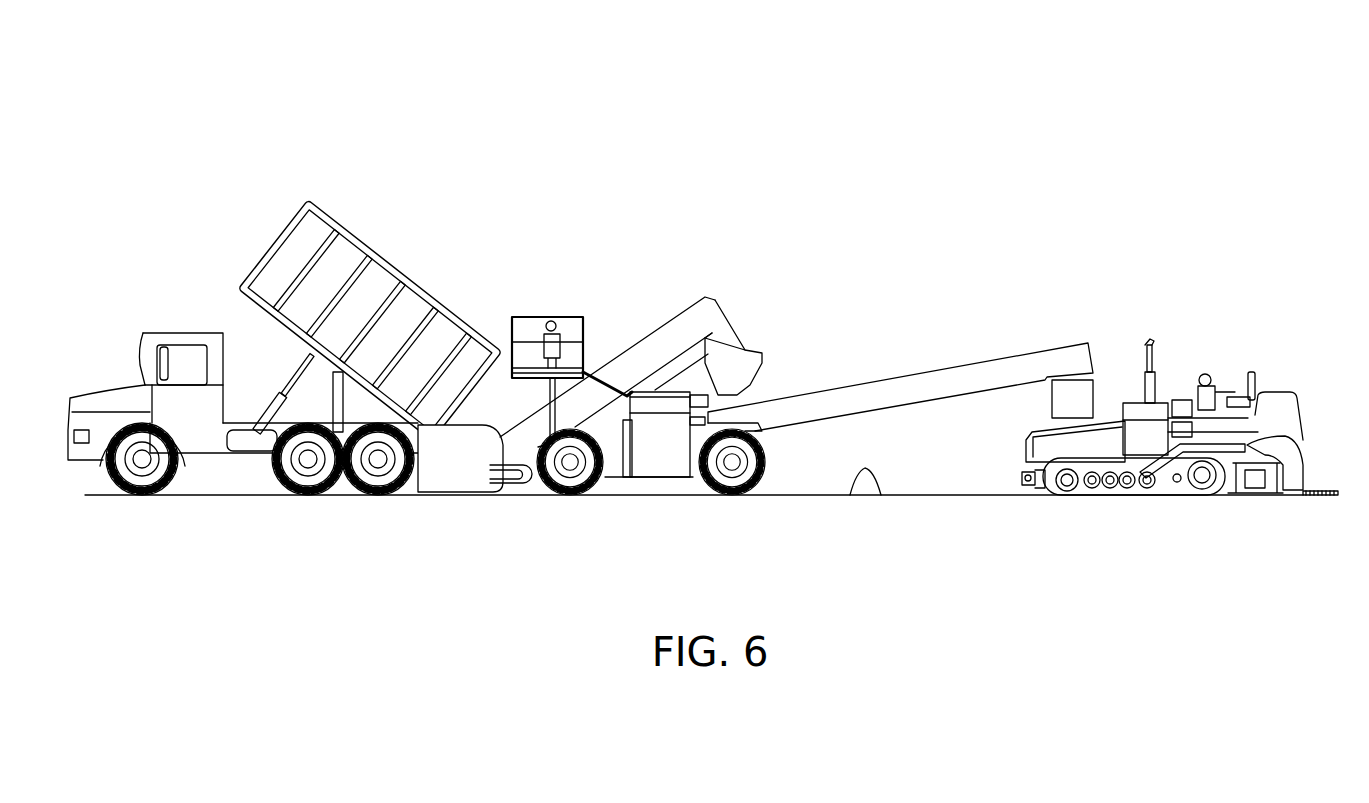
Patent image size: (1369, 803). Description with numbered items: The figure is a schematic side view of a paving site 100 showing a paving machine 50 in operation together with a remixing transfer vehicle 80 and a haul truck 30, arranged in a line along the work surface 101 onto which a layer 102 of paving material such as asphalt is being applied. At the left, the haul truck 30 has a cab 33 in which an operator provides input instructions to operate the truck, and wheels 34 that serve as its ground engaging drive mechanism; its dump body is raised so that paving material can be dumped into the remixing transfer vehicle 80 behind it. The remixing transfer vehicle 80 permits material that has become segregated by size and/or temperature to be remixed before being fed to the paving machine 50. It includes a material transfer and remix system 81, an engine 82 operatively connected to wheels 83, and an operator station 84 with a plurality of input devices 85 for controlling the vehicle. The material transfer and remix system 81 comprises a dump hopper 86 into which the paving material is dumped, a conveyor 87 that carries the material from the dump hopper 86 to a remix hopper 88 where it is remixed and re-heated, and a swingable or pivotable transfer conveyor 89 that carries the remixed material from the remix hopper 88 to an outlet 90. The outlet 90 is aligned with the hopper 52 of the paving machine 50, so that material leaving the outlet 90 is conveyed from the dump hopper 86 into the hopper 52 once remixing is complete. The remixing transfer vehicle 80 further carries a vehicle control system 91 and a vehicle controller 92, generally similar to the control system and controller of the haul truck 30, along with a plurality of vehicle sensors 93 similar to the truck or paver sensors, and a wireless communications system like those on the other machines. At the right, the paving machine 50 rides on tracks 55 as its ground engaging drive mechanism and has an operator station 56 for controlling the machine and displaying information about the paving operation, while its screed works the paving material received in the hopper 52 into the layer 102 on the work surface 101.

The haul truck 30 is at (288, 142).
The cab 33 is at (193, 338).
The wheels 34 is at (200, 443).
The remixing transfer vehicle 80 is at (708, 214).
The material transfer and remix system 81 is at (735, 242).
The engine 82 is at (607, 337).
The wheels 83 is at (570, 482).
The operator station 84 is at (572, 319).
The input devices 85 is at (563, 333).
The dump hopper 86 is at (458, 453).
The conveyor 87 is at (680, 329).
The remix hopper 88 is at (742, 375).
The transfer conveyor 89 is at (900, 374).
The outlet 90 is at (1070, 400).
The vehicle control system 91 is at (775, 252).
The vehicle controller 92 is at (803, 289).
The vehicle sensors 93 is at (843, 310).
The paving site 100 is at (1017, 155).
The work surface 101 is at (881, 495).
The layer 102 is at (1322, 490).
The paving machine 50 is at (1165, 300).
The hopper 52 is at (1082, 445).
The tracks 55 is at (1118, 490).
The operator station 56 is at (1203, 334).